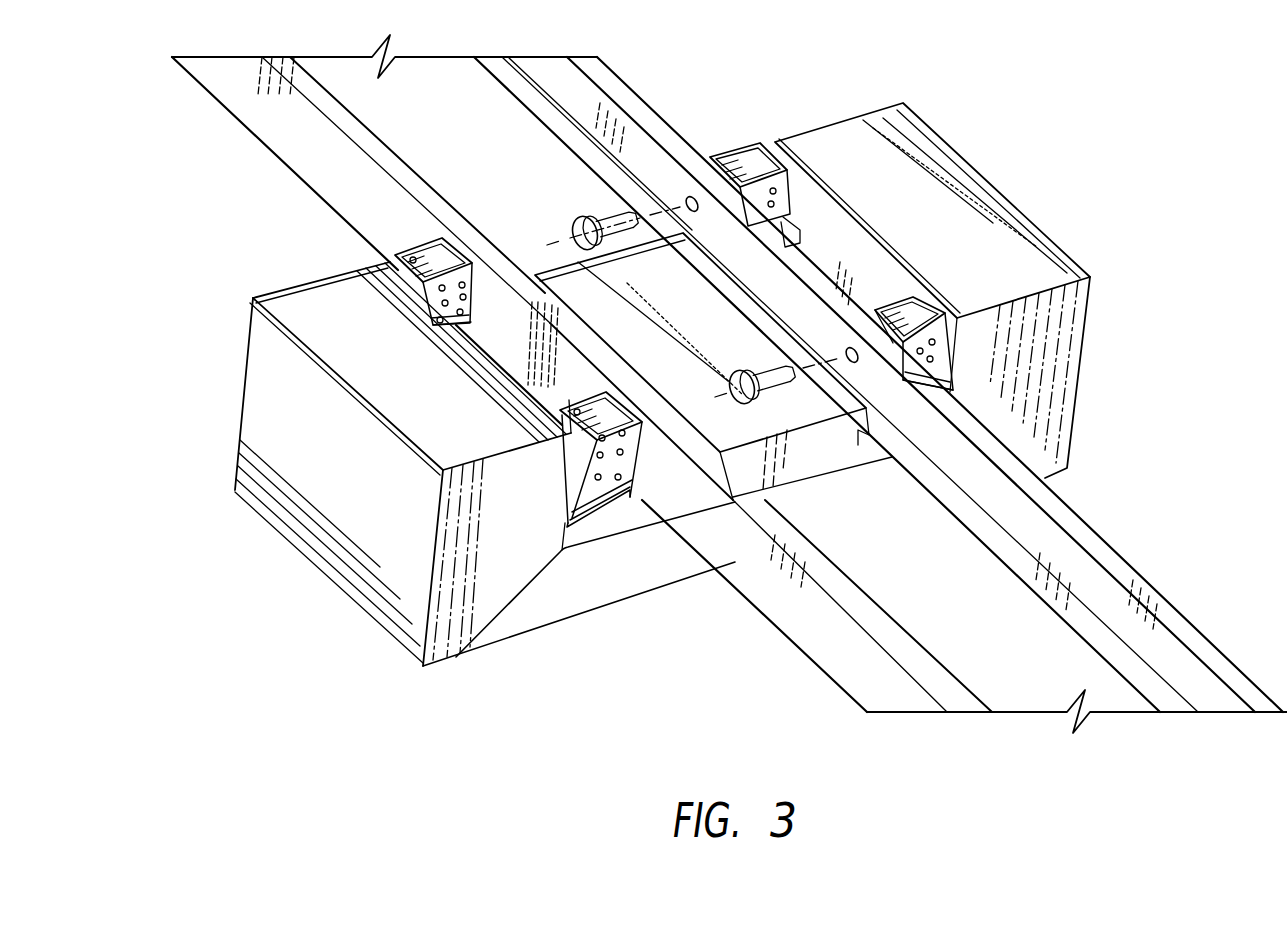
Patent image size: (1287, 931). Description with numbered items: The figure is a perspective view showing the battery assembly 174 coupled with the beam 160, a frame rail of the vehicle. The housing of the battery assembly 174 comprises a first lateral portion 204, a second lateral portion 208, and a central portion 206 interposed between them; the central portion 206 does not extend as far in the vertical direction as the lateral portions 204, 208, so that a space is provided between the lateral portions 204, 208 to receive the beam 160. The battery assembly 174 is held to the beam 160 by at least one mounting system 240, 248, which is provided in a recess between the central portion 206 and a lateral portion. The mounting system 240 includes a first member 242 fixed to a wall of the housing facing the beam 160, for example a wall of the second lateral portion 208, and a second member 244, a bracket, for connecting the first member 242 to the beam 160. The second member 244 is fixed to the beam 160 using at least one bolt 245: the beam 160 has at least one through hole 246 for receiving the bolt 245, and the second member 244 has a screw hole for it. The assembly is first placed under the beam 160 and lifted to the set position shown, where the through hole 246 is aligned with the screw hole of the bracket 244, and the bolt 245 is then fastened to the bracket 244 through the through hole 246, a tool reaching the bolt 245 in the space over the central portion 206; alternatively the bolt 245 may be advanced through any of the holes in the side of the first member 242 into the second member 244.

The beam 160 is at (208, 104).
The battery assembly 174 is at (318, 592).
The first lateral portion 204 is at (270, 407).
The central portion 206 is at (555, 285).
The second lateral portion 208 is at (973, 175).
The mounting system 240 is at (974, 221).
The first member 242 is at (957, 317).
The second member 244 is at (1018, 353).
The bolt 245 is at (765, 390).
The through hole 246 is at (688, 196).
The mounting system 248 is at (396, 238).